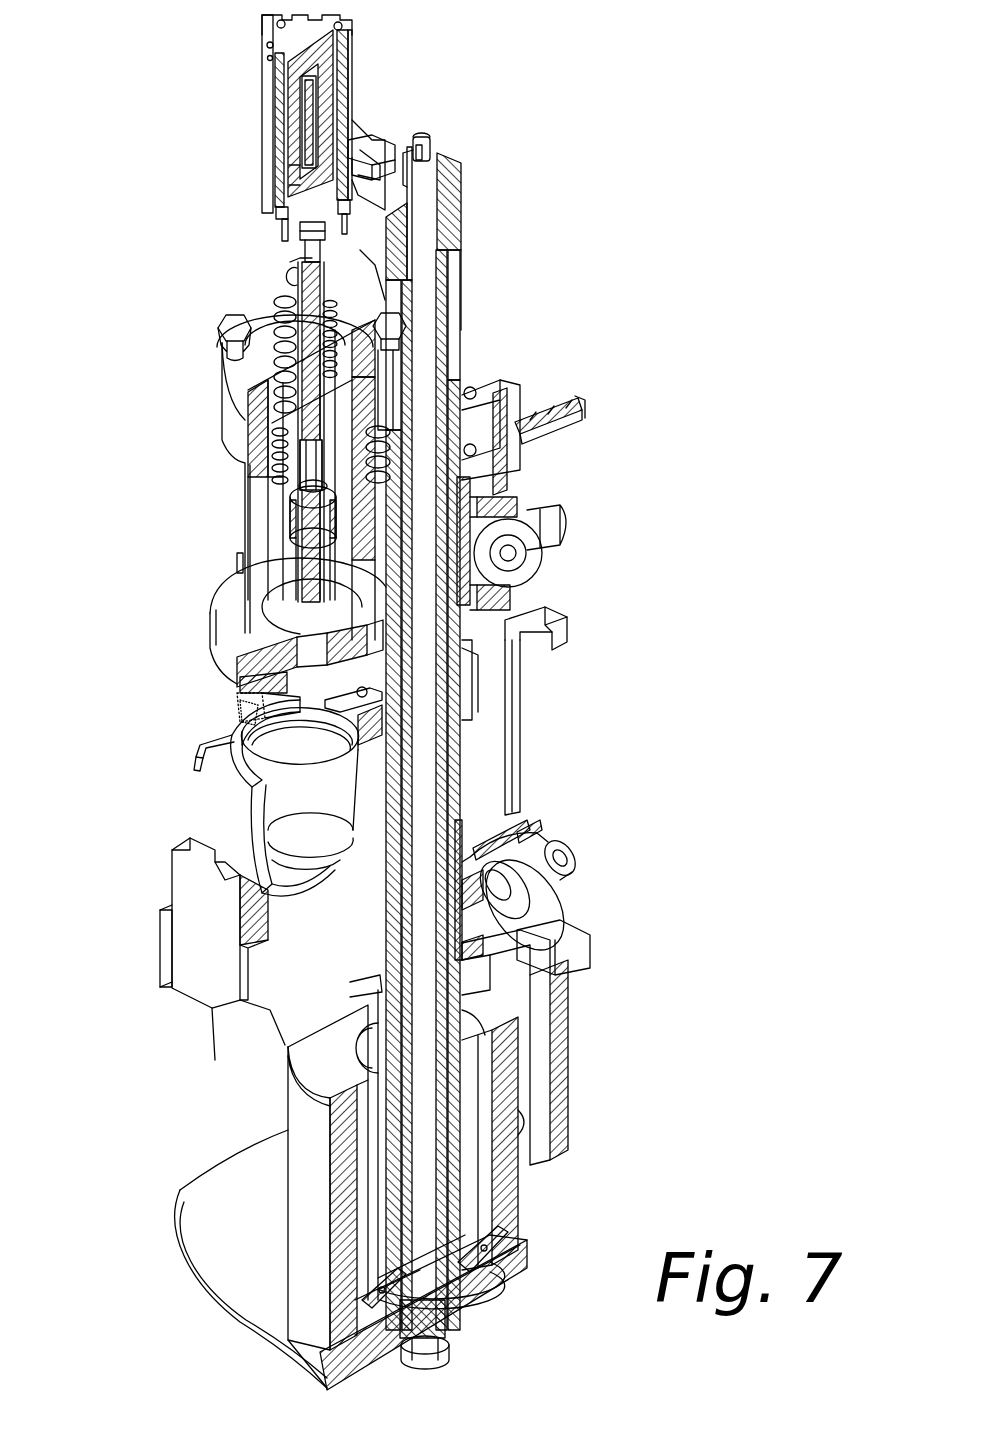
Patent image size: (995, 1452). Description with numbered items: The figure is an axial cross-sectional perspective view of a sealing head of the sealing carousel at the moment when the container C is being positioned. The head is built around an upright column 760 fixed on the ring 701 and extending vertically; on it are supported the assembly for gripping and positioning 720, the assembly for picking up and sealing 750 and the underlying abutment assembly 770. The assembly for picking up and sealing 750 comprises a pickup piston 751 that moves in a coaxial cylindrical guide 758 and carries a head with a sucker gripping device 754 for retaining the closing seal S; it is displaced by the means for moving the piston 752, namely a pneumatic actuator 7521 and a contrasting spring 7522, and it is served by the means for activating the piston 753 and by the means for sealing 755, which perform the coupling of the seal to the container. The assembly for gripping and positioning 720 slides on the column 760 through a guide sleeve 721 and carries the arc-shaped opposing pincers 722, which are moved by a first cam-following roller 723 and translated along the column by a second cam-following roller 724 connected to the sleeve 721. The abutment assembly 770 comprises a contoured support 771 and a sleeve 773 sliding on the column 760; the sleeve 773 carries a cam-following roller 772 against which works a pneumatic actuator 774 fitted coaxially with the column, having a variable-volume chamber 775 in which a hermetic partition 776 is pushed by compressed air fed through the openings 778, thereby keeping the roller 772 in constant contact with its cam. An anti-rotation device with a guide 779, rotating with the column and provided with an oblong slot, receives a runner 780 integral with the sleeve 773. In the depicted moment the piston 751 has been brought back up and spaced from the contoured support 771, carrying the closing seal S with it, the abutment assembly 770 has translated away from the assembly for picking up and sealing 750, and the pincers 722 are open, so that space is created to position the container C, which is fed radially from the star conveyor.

The means for moving the piston 752 is at (258, 125).
The pneumatic actuator 7521 is at (333, 100).
The contrasting spring 7522 is at (288, 275).
The upright column 760 is at (422, 206).
The assembly for picking up and sealing 750 is at (196, 634).
The coaxial cylindrical guide 758 is at (250, 478).
The means for activating the piston 753 is at (298, 490).
The pickup piston 751 is at (283, 586).
The means for sealing 755 is at (236, 693).
The pincers 722 is at (212, 713).
The closing seal S is at (235, 740).
The sucker gripping device 754 is at (250, 771).
The container C is at (266, 833).
The abutment assembly 770 is at (175, 940).
The contoured support 771 is at (193, 990).
The actuator 774 is at (278, 1185).
The ring 701 is at (232, 1208).
The variable-volume chamber 775 is at (377, 1311).
The hermetic partition 776 is at (500, 1247).
The openings 778 is at (416, 1303).
The assembly for gripping and positioning 720 is at (595, 442).
The first cam-following roller 723 is at (537, 407).
The second cam-following roller 724 is at (522, 567).
The guide 779 is at (546, 625).
The sleeve 773 is at (445, 763).
The guide sleeve 721 is at (462, 647).
The runner 780 is at (577, 863).
The cam-following roller 772 is at (552, 910).